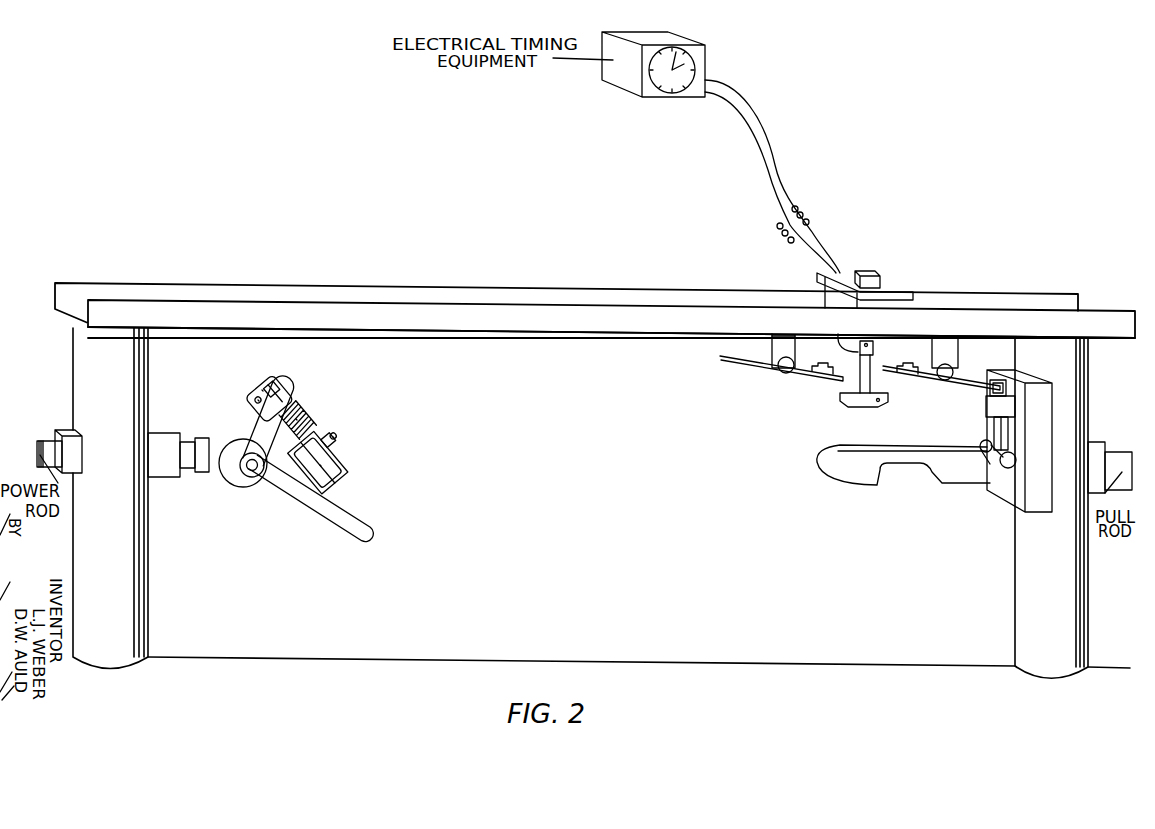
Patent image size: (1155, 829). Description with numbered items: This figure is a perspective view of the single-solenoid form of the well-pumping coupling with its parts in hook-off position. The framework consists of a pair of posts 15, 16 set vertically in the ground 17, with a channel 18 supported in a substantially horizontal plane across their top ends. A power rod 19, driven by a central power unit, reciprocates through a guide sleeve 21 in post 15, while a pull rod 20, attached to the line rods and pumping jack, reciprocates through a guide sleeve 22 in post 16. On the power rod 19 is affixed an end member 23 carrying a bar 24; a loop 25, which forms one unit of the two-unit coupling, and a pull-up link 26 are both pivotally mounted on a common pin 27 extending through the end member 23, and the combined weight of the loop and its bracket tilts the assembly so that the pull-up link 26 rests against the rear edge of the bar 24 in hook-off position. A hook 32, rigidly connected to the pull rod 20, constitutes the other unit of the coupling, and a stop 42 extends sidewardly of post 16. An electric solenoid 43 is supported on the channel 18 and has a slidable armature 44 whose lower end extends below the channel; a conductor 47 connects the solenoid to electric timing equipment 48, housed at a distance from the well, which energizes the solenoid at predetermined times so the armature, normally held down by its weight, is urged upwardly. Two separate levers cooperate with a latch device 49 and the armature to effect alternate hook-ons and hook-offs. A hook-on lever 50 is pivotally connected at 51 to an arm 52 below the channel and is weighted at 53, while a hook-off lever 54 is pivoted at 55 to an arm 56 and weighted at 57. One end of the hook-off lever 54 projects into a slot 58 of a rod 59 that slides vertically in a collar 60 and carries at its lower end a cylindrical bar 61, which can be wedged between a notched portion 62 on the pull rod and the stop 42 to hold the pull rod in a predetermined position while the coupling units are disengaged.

The post 15 is at (127, 555).
The post 16 is at (1028, 590).
The ground 17 is at (613, 660).
The channel 18 is at (342, 293).
The power rod 19 is at (53, 450).
The pull rod 20 is at (1112, 453).
The guide sleeve 21 is at (72, 433).
The guide sleeve 22 is at (1095, 445).
The end member 23 is at (210, 467).
The bar 24 is at (267, 453).
The loop 25 is at (355, 530).
The pull-up link 26 is at (295, 391).
The pin 27 is at (250, 470).
The hook 32 is at (845, 472).
The stop 42 is at (1037, 507).
The electric solenoid 43 is at (907, 292).
The armature 44 is at (870, 341).
The conductor 47 is at (757, 125).
The electric timing equipment 48 is at (636, 90).
The latch device 49 is at (853, 405).
The hook-on lever 50 is at (750, 364).
The pivot 51 is at (785, 370).
The arm 52 is at (780, 345).
The weight 53 is at (822, 367).
The hook-off lever 54 is at (938, 374).
The pivot 55 is at (947, 377).
The arm 56 is at (948, 348).
The weight 57 is at (913, 368).
The slot 58 is at (1007, 388).
The rod 59 is at (997, 425).
The collar 60 is at (1012, 407).
The cylindrical bar 61 is at (1017, 460).
The notched portion 62 is at (990, 459).